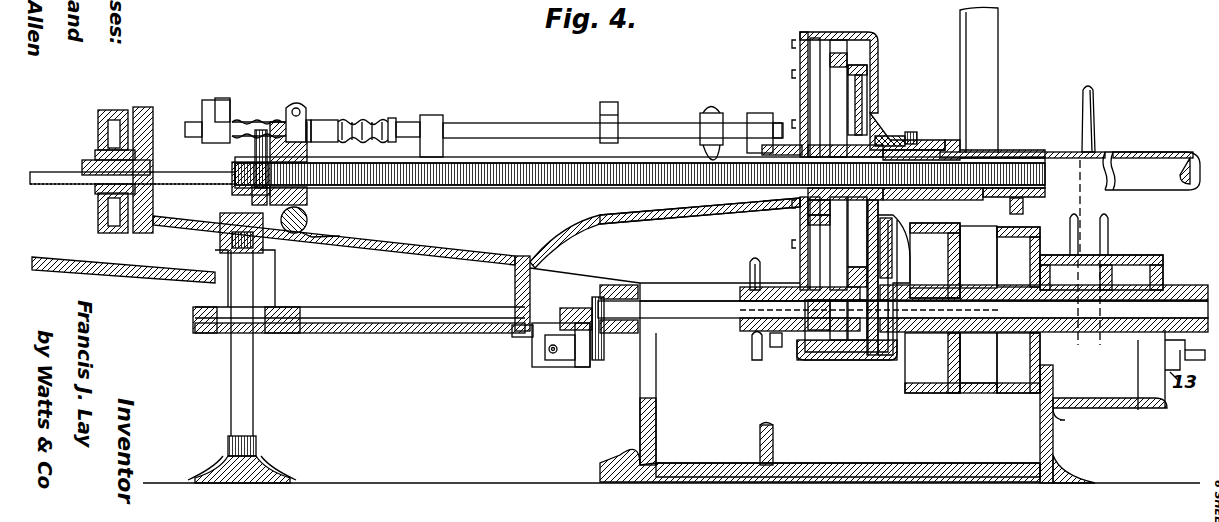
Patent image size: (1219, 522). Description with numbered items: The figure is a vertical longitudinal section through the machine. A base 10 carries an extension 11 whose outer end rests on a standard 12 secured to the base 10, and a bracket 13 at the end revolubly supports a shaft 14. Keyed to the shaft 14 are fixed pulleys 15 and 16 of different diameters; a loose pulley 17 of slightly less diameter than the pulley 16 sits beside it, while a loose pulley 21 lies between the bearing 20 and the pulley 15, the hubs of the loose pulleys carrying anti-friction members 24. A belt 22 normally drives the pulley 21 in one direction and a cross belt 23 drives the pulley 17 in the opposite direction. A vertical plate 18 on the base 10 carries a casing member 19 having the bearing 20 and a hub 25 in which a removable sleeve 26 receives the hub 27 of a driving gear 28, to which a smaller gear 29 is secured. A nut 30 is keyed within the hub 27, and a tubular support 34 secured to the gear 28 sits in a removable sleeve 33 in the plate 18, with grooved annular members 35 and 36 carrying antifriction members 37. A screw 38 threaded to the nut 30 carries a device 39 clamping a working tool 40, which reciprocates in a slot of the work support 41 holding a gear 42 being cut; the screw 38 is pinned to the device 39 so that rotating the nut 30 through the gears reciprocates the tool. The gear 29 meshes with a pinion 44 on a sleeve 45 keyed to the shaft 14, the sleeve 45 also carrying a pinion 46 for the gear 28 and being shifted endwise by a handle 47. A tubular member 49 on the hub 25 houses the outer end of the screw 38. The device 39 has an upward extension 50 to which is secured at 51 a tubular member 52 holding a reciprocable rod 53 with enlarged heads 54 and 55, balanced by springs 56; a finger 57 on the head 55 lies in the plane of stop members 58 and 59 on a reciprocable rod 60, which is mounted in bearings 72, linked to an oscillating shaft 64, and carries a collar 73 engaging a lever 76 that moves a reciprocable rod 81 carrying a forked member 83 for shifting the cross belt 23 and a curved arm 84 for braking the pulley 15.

The base 10 is at (642, 425).
The extension 11 is at (392, 258).
The standard 12 is at (245, 388).
The bracket 13 is at (615, 333).
The shaft 14 is at (703, 318).
The pulley 15 is at (1015, 393).
The pulley 16 is at (1060, 370).
The pulley 17 is at (1118, 256).
The vertical plate 18 is at (800, 48).
The casing member 19 is at (878, 48).
The bearing 20 is at (905, 355).
The loose pulley 21 is at (935, 393).
The belt 22 is at (988, 77).
The cross belt 23 is at (1093, 120).
The anti-friction members 24 is at (1140, 410).
The hub 25 is at (880, 125).
The removable sleeve 26 is at (900, 136).
The hub 27 is at (928, 236).
The driving gear 28 is at (836, 53).
The gear 29 is at (858, 65).
The nut 30 is at (935, 148).
The removable sleeve 33 is at (790, 145).
The tubular support 34 is at (705, 195).
The grooved annular member 35 is at (805, 225).
The grooved annular member 36 is at (768, 258).
The antifriction members 37 is at (805, 208).
The screw 38 is at (495, 160).
The device 39 is at (307, 213).
The working tool 40 is at (50, 176).
The work support 41 is at (88, 160).
The gear 42 is at (108, 118).
The pinion 44 is at (860, 347).
The sleeve 45 is at (822, 347).
The pinion 46 is at (785, 345).
The handle 47 is at (755, 355).
The tubular member 49 is at (1022, 152).
The upward extension 50 is at (296, 98).
The securing point 51 is at (310, 122).
The tubular member 52 is at (322, 122).
The reciprocable rod 53 is at (392, 118).
The enlarged head 54 is at (405, 122).
The enlarged head 55 is at (230, 130).
The springs 56 is at (256, 120).
The finger 57 is at (222, 98).
The stop member 58 is at (208, 105).
The stop member 59 is at (610, 104).
The reciprocable rod 60 is at (552, 123).
The oscillating shaft 64 is at (320, 232).
The bearings 72 is at (436, 118).
The collar 73 is at (701, 125).
The lever 76 is at (712, 106).
The reciprocable rod 81 is at (1189, 349).
The forked member 83 is at (1108, 220).
The curved arm 84 is at (1023, 207).